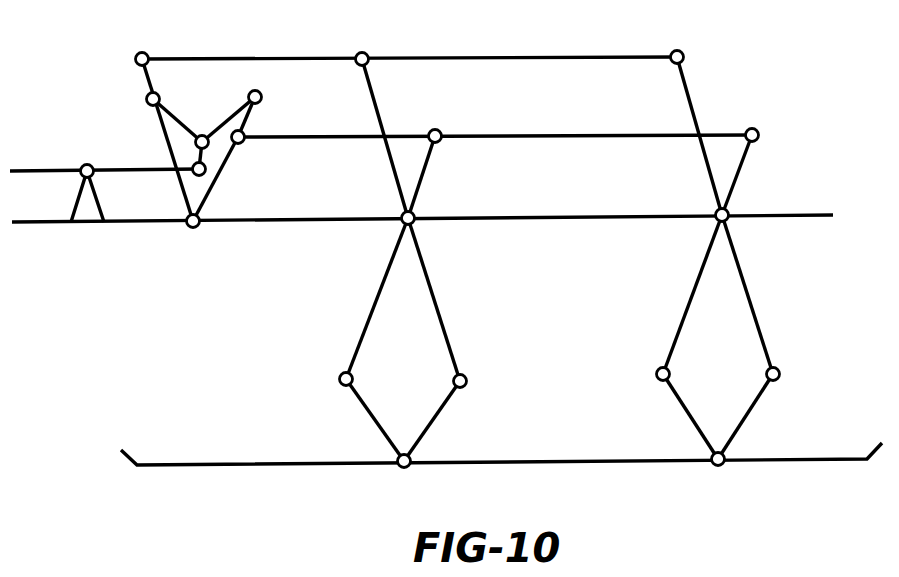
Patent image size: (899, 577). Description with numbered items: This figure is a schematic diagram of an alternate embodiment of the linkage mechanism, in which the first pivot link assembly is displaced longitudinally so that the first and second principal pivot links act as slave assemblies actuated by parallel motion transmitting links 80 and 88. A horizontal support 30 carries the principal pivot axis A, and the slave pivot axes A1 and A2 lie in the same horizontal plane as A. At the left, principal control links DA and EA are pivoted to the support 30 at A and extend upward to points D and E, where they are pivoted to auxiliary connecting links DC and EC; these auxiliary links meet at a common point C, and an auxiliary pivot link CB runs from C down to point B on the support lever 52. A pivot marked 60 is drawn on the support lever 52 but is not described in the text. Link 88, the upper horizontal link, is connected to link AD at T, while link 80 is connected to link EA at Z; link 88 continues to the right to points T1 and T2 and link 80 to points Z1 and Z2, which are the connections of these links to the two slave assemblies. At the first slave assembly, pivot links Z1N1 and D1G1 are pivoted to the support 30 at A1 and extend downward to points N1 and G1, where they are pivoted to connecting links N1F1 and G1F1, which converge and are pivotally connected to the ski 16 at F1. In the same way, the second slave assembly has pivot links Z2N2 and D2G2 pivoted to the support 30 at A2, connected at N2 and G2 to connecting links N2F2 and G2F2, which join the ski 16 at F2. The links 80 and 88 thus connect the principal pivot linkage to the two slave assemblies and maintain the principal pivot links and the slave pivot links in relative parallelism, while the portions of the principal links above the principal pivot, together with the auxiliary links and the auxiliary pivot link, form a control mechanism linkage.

The ski 16 is at (551, 459).
The support 30 is at (570, 214).
The support lever 52 is at (46, 168).
The pivot 60 is at (92, 165).
The motion transmitting link 80 is at (556, 134).
The motion transmitting link 88 is at (520, 57).
The pivot point T is at (139, 54).
The pivot point D is at (157, 95).
The pivot point E is at (258, 93).
The pivot point C is at (203, 137).
The pivot point Z is at (244, 134).
The pivot point B is at (205, 169).
The principal pivot axis A is at (202, 219).
The pivot point T1 is at (359, 53).
The pivot point Z1 is at (436, 132).
The slave pivot axis A1 is at (421, 208).
The pivot point N1 is at (340, 379).
The pivot point G1 is at (466, 378).
The pivot point F1 is at (400, 467).
The pivot point T2 is at (674, 52).
The pivot point Z2 is at (756, 131).
The slave pivot axis A2 is at (727, 212).
The pivot point N2 is at (657, 374).
The pivot point G2 is at (784, 367).
The pivot point F2 is at (715, 465).